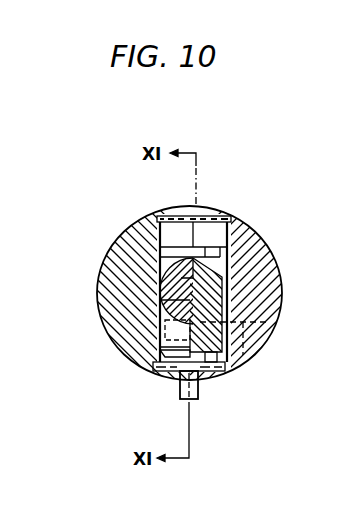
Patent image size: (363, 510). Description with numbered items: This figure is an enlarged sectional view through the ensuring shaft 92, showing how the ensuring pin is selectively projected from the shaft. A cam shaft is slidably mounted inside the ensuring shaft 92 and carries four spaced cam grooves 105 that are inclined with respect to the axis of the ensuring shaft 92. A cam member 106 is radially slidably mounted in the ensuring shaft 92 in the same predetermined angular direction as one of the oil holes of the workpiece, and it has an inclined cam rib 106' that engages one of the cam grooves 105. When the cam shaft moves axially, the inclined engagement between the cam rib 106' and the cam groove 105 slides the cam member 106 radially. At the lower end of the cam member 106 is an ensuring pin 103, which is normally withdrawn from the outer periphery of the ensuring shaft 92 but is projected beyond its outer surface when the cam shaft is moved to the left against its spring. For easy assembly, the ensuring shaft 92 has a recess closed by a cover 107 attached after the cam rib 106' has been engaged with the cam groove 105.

The ensuring shaft 92 is at (120, 258).
The ensuring pin 103 is at (180, 385).
The cam groove 105 is at (165, 290).
The cam member 106 is at (235, 281).
The inclined cam rib 106' is at (141, 304).
The cover 107 is at (260, 246).